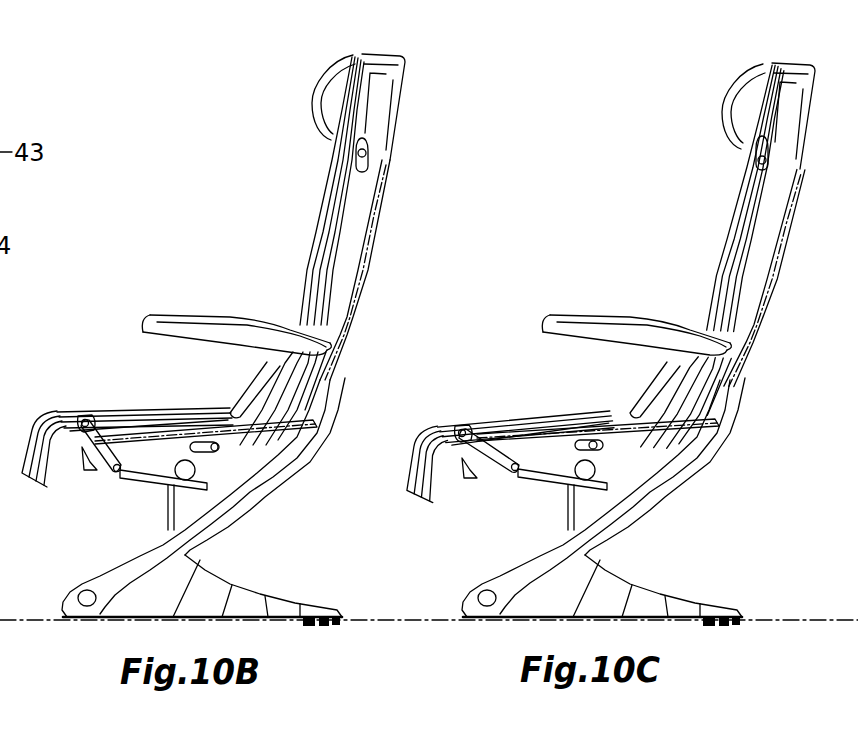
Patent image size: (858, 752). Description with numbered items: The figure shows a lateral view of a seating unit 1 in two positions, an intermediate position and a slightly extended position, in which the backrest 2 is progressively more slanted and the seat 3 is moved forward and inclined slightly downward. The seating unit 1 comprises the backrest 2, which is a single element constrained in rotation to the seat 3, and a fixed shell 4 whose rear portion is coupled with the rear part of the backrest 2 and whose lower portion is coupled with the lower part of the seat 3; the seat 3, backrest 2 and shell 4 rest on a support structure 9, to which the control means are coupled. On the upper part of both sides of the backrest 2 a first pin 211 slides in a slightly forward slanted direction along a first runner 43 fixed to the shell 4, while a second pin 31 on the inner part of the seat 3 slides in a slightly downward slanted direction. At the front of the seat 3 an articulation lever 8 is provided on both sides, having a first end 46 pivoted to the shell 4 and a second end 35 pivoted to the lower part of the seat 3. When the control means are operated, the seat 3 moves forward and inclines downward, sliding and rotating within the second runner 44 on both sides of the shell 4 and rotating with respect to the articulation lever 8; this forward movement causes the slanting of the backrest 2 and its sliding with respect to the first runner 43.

In FIG. 10B, the seating unit 1 is at (240, 177).
In FIG. 10C, the seating unit 1 is at (642, 197).
In FIG. 10B, the backrest 2 is at (314, 235).
In FIG. 10C, the backrest 2 is at (713, 248).
In FIG. 10B, the seat 3 is at (72, 410).
In FIG. 10C, the seat 3 is at (453, 414).
In FIG. 10B, the fixed shell 4 is at (368, 271).
In FIG. 10C, the fixed shell 4 is at (770, 281).
In FIG. 10B, the articulation lever 8 is at (97, 458).
In FIG. 10C, the articulation lever 8 is at (490, 467).
In FIG. 10B, the support structure 9 is at (75, 562).
In FIG. 10C, the support structure 9 is at (460, 582).
In FIG. 10B, the second pin 31 is at (213, 449).
In FIG. 10C, the second pin 31 is at (597, 448).
In FIG. 10B, the second end 35 is at (87, 421).
In FIG. 10C, the second end 35 is at (464, 431).
In FIG. 10B, the first runner 43 is at (369, 148).
In FIG. 10C, the first runner 43 is at (767, 147).
In FIG. 10B, the second runner 44 is at (240, 445).
In FIG. 10C, the second runner 44 is at (640, 438).
In FIG. 10B, the first end 46 is at (115, 472).
In FIG. 10C, the first end 46 is at (516, 471).
In FIG. 10B, the first pin 211 is at (366, 155).
In FIG. 10C, the first pin 211 is at (766, 165).